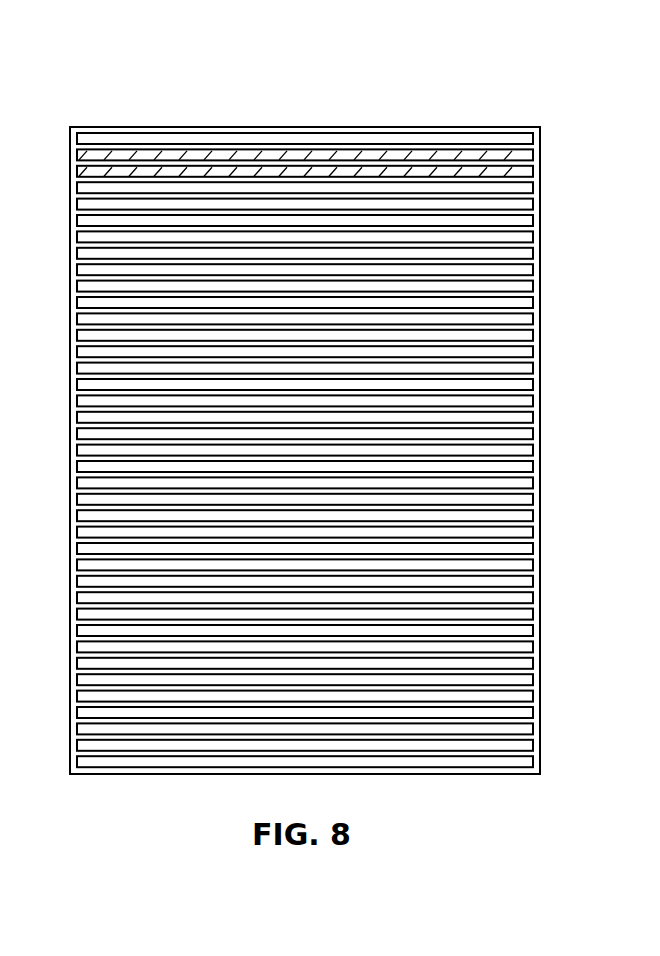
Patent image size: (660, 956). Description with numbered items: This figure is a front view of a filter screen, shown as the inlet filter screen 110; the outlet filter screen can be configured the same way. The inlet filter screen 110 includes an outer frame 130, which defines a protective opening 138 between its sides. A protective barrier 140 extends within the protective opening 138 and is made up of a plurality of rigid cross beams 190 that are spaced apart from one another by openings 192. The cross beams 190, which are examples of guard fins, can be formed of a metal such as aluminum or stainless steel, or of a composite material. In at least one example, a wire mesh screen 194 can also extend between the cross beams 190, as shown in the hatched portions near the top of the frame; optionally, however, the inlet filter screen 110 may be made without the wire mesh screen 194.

The inlet filter screen 110 is at (119, 62).
The outer frame 130 is at (552, 285).
The protective opening 138 is at (520, 256).
The protective barrier 140 is at (490, 385).
The cross beams 190 is at (522, 498).
The openings 192 is at (522, 643).
The wire mesh screen 194 is at (532, 173).